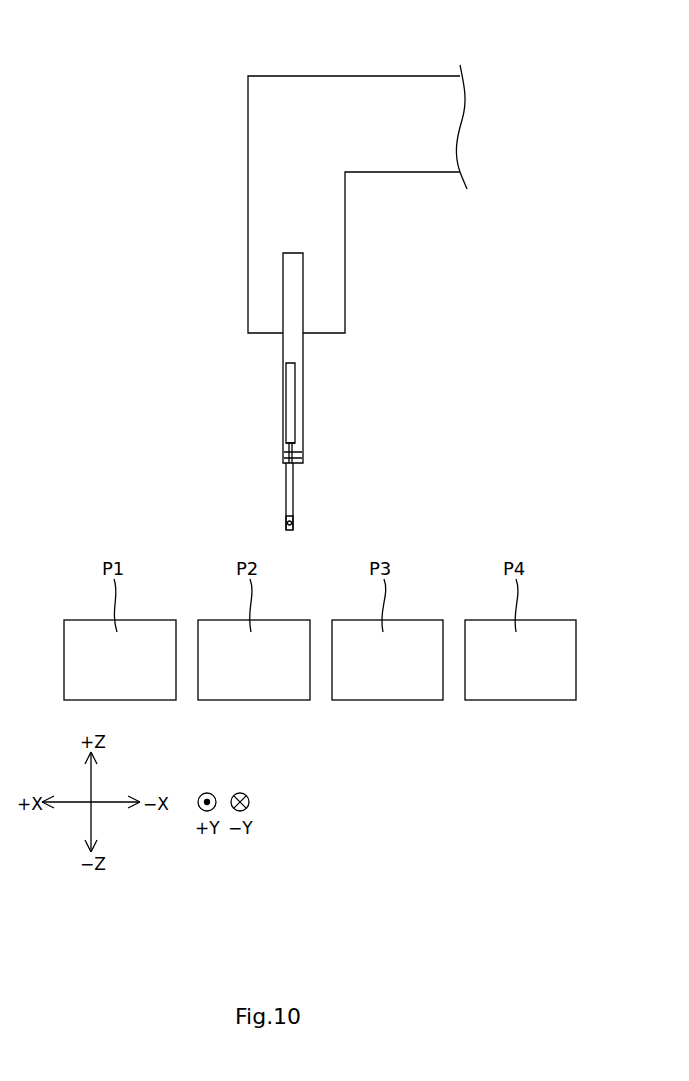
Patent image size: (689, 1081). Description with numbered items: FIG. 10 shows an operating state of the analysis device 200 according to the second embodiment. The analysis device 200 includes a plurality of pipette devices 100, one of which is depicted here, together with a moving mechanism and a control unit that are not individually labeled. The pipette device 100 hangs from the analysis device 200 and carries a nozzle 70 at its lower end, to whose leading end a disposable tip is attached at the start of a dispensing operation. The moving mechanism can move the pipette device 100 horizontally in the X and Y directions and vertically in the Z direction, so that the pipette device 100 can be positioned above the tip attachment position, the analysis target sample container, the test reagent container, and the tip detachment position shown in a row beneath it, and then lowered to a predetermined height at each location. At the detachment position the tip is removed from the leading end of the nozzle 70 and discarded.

The analysis device 200 is at (377, 60).
The pipette device 100 is at (303, 365).
The nozzle 70 is at (293, 492).